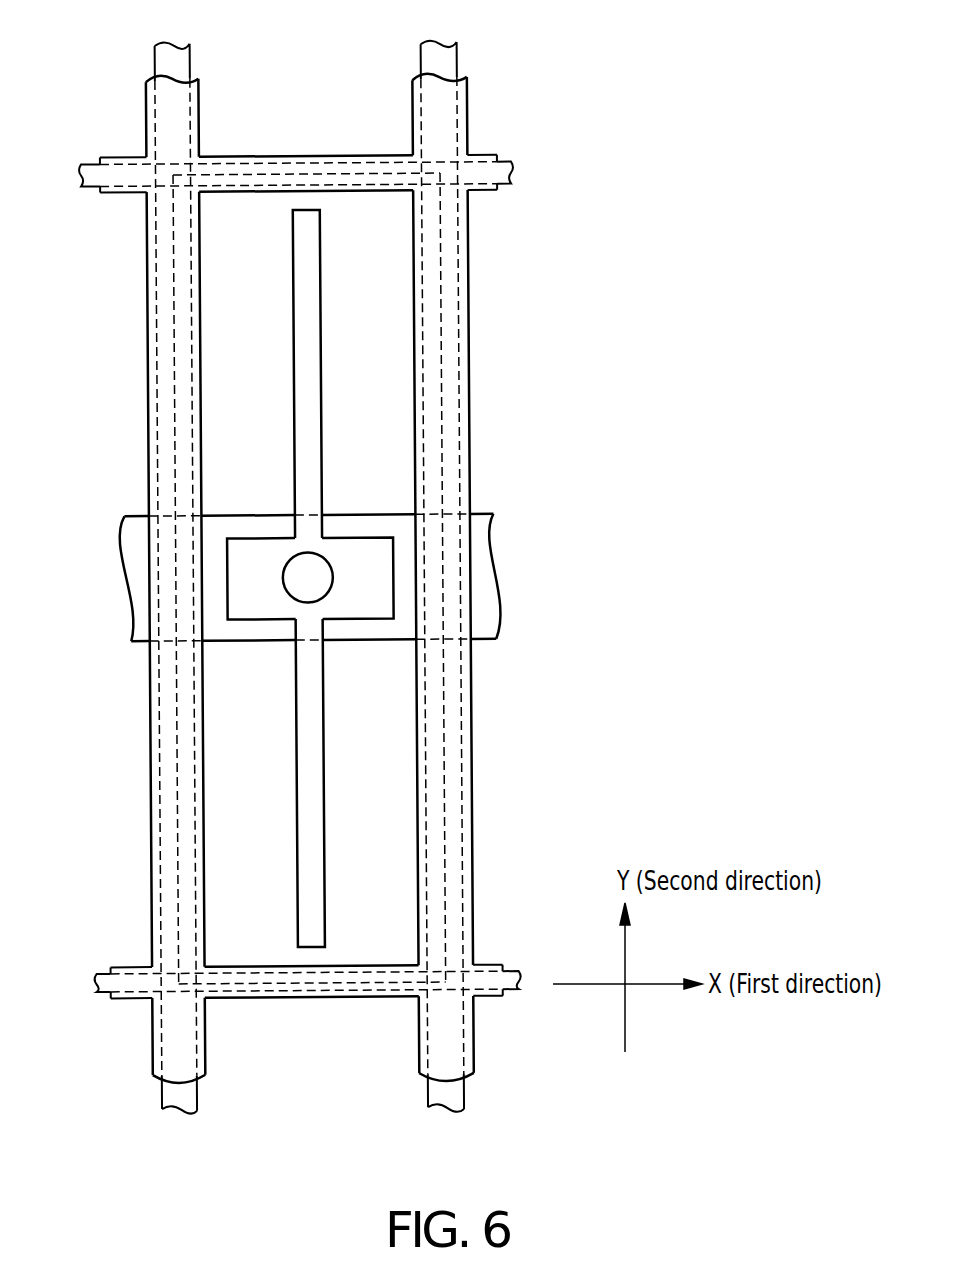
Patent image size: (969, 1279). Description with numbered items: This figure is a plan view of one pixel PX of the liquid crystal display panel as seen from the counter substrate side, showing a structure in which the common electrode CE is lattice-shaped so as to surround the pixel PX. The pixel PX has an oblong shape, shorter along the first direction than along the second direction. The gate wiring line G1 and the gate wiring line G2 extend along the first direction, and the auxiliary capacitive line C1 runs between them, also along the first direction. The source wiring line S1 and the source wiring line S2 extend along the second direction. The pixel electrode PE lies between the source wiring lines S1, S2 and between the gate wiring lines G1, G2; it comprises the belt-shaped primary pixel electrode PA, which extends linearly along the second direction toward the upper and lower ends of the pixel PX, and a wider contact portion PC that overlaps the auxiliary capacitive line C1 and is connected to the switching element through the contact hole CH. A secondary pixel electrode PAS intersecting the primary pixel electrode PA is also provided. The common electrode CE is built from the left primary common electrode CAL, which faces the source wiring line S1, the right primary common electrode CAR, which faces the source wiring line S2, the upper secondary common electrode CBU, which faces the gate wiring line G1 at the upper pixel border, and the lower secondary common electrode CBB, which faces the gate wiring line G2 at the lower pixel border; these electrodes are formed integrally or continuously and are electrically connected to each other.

The source wiring line S1 is at (172, 57).
The source wiring line S2 is at (439, 57).
The gate wiring line G1 is at (80, 173).
The gate wiring line G2 is at (90, 982).
The secondary common electrode CBU is at (308, 153).
The secondary common electrode CBB is at (317, 1002).
The primary common electrode CAL is at (152, 875).
The primary common electrode CAR is at (472, 710).
The common electrode CE is at (310, 601).
The pixel PX is at (446, 165).
The pixel electrode PE is at (372, 577).
The primary pixel electrode PA is at (313, 347).
The secondary pixel electrode PAS is at (250, 558).
The contact portion PC is at (333, 548).
The contact hole CH is at (287, 592).
The auxiliary capacitive line C1 is at (123, 587).